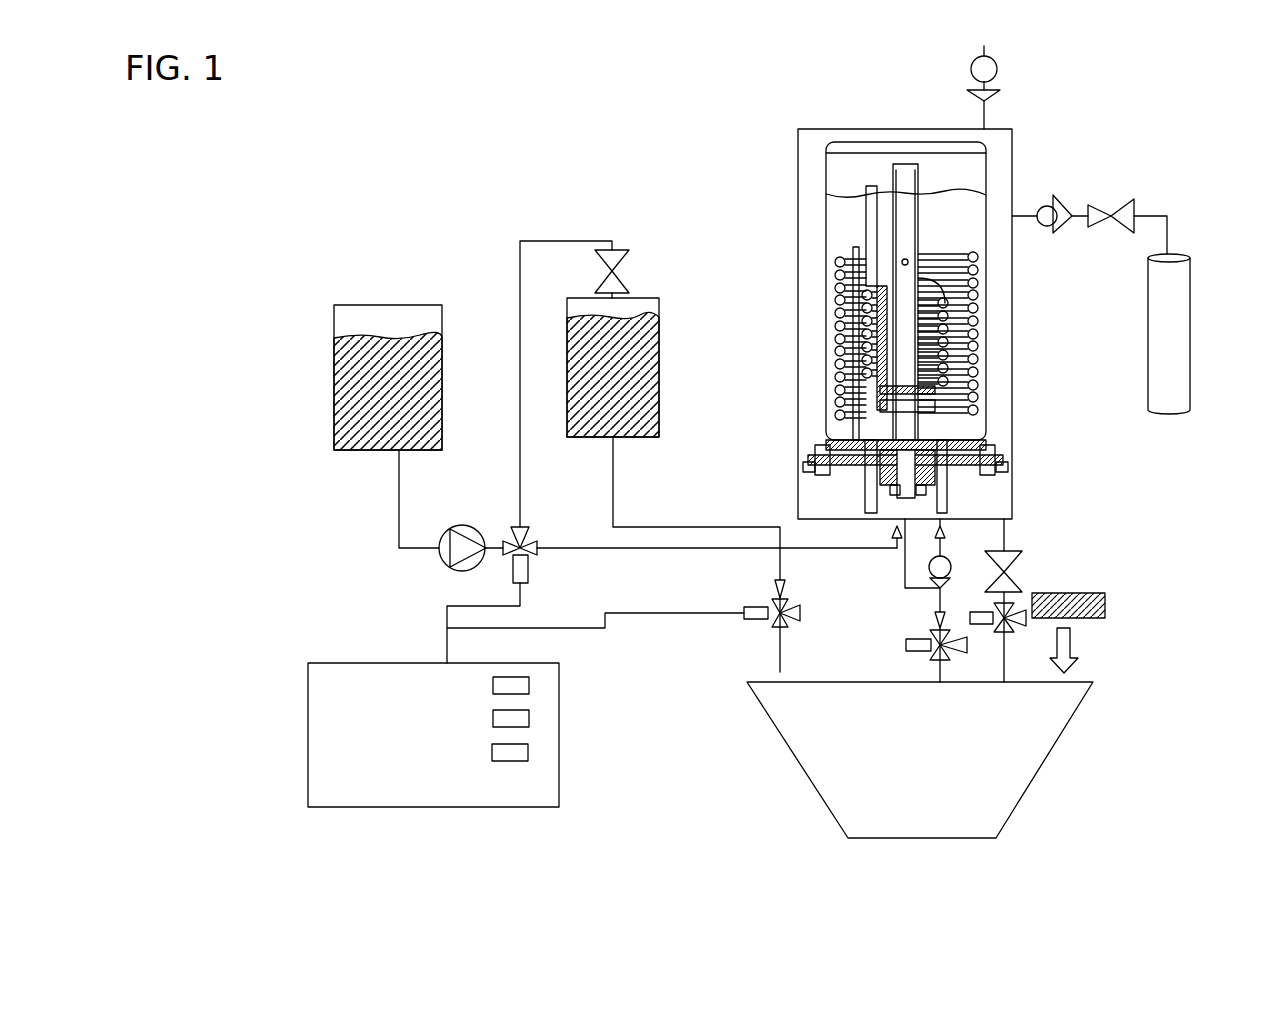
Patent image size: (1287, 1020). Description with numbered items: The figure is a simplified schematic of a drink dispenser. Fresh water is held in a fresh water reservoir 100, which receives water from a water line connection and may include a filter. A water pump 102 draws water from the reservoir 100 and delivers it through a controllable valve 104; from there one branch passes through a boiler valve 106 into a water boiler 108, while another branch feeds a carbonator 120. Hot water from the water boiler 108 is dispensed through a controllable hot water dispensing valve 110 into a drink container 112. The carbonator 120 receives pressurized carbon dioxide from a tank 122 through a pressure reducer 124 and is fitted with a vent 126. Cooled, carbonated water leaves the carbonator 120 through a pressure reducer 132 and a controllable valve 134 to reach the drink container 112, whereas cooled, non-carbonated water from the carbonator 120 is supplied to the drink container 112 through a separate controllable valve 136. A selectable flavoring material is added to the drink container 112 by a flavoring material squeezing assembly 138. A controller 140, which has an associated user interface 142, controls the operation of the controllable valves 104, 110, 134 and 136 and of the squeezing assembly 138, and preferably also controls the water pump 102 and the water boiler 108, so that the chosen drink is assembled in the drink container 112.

The fresh water reservoir 100 is at (345, 388).
The water pump 102 is at (450, 556).
The controllable valve 104 is at (551, 529).
The boiler valve 106 is at (620, 262).
The water boiler 108 is at (640, 350).
The controllable hot water dispensing valve 110 is at (761, 590).
The drink container 112 is at (807, 749).
The carbonator 120 is at (814, 133).
The tank 122 is at (1177, 328).
The pressure reducer 124 is at (1119, 191).
The vent 126 is at (963, 65).
The pressure reducer 132 is at (1044, 545).
The controllable valve 134 is at (990, 641).
The controllable valve 136 is at (913, 620).
The flavoring material squeezing assembly 138 is at (1105, 594).
The controller 140 is at (322, 728).
The user interface 142 is at (517, 686).